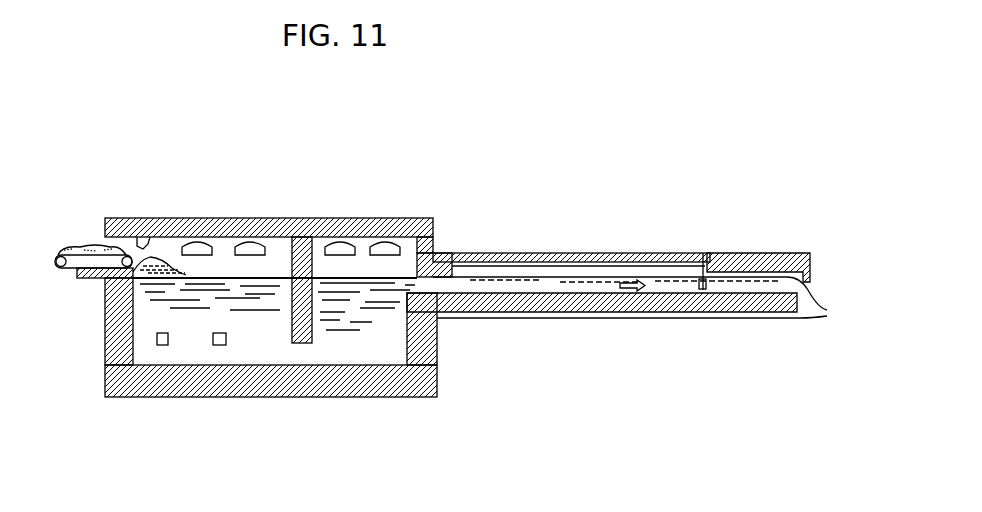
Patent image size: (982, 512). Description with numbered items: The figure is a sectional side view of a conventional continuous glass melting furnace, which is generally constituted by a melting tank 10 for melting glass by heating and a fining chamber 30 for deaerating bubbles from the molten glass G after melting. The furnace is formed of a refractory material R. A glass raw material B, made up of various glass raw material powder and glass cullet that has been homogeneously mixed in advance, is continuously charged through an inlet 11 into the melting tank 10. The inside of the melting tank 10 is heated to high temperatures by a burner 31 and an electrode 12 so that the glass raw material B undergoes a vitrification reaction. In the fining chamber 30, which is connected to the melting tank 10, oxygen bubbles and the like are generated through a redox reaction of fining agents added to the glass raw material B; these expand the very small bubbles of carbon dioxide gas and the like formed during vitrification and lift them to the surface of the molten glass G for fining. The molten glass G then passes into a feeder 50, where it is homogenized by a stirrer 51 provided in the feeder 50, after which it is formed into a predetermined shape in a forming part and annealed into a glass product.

The melting tank 10 is at (198, 357).
The inlet 11 is at (103, 240).
The electrode 12 is at (152, 342).
The fining chamber 30 is at (382, 357).
The burner 31 is at (283, 238).
The feeder 50 is at (577, 320).
The stirrer 51 is at (703, 253).
The glass raw material B is at (140, 266).
The molten glass G is at (397, 318).
The refractory material R is at (433, 250).